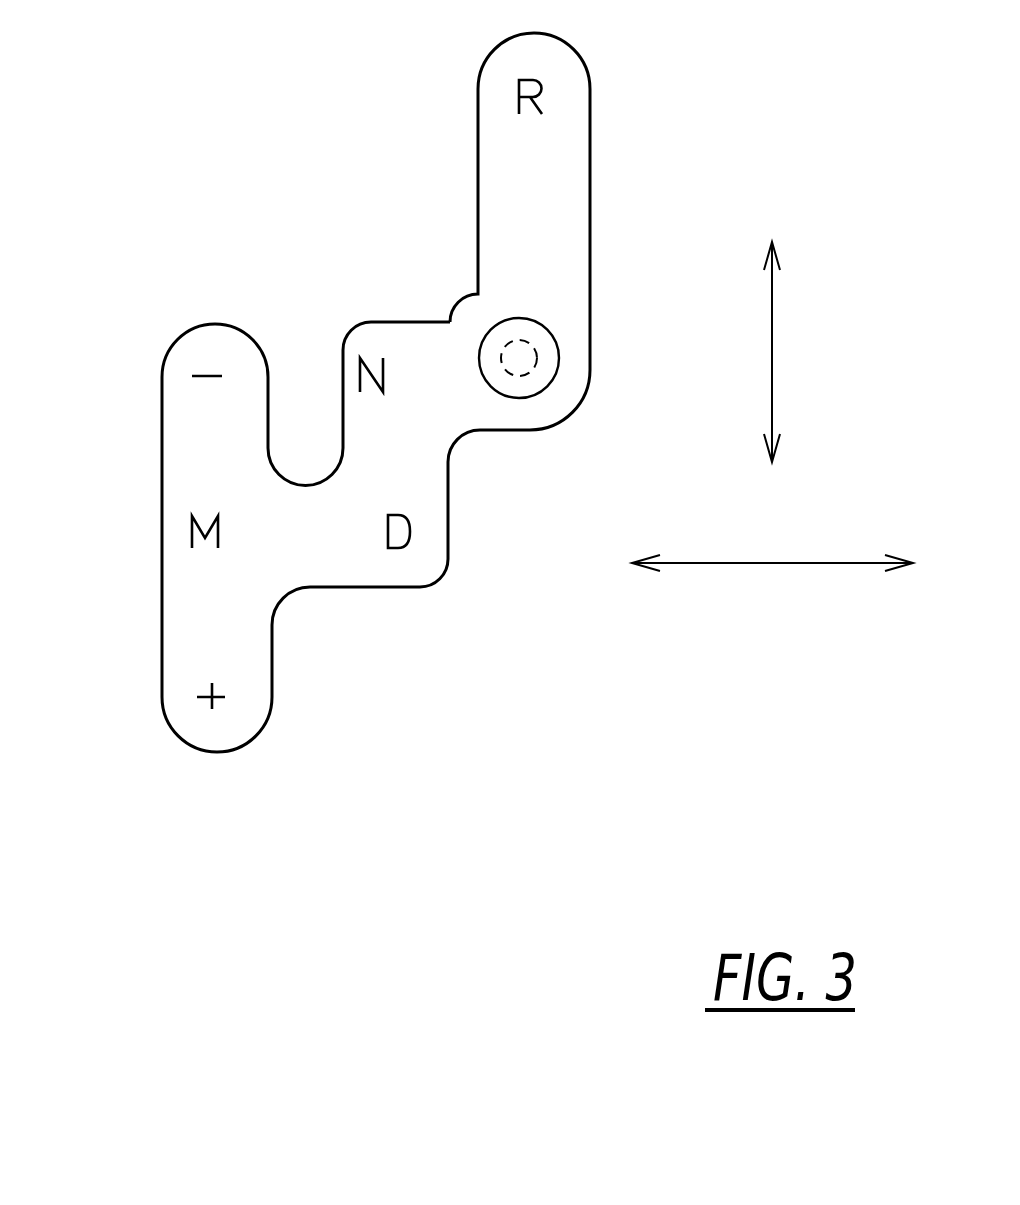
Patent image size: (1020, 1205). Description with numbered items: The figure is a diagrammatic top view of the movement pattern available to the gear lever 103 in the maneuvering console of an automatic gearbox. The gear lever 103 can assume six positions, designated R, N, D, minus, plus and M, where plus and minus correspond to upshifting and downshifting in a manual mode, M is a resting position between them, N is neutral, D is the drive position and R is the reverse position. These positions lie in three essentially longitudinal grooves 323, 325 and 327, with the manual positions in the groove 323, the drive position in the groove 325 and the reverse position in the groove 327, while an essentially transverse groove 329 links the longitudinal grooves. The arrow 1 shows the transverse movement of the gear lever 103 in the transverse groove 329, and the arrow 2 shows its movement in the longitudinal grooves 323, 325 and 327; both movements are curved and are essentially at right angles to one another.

The longitudinal groove 327 is at (590, 113).
The longitudinal groove 325 is at (448, 508).
The longitudinal groove 323 is at (163, 640).
The transverse groove 329 is at (309, 483).
The gear lever 103 is at (557, 343).
The arrow 1 is at (790, 563).
The arrow 2 is at (772, 366).